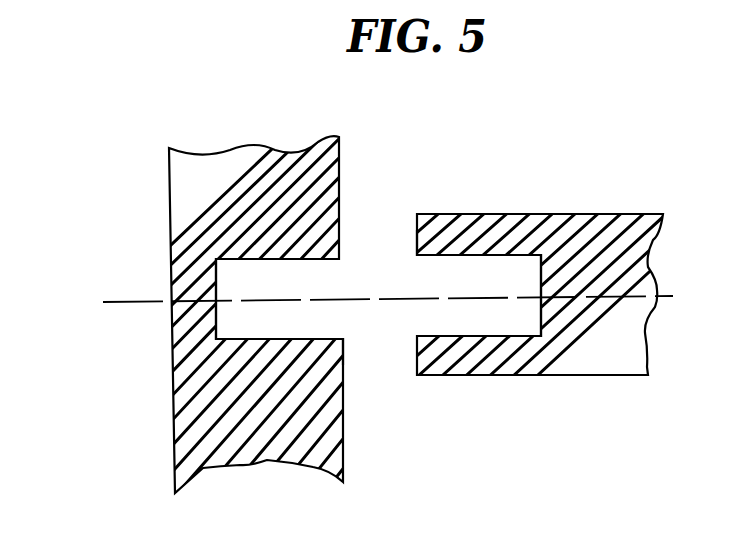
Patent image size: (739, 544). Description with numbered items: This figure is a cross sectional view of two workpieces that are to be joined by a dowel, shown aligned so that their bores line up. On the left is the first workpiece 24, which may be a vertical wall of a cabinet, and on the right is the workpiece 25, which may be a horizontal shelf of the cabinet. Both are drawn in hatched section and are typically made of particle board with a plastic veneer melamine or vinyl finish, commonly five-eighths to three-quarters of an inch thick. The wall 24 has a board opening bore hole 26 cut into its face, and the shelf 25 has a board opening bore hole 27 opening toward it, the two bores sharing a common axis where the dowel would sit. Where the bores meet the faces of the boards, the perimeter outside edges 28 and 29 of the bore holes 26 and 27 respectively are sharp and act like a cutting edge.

The first workpiece 24 is at (168, 222).
The workpiece 25 is at (575, 212).
The board opening bore hole 26 is at (328, 281).
The board opening bore hole 27 is at (421, 312).
The perimeter outside edge 28 is at (345, 340).
The perimeter outside edge 29 is at (412, 257).